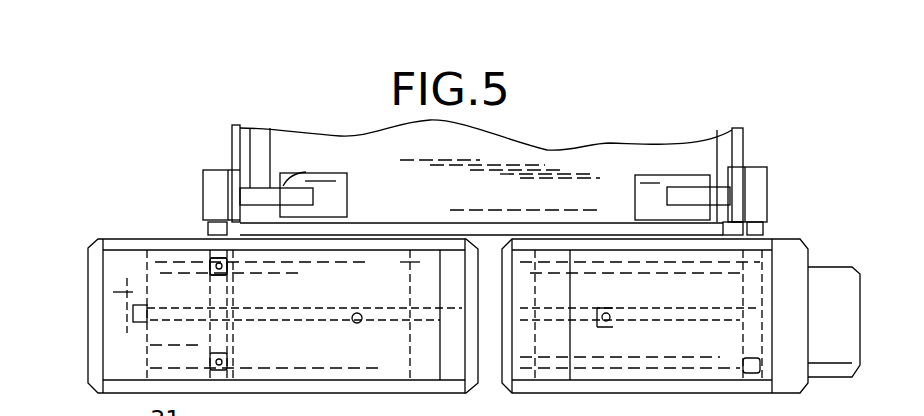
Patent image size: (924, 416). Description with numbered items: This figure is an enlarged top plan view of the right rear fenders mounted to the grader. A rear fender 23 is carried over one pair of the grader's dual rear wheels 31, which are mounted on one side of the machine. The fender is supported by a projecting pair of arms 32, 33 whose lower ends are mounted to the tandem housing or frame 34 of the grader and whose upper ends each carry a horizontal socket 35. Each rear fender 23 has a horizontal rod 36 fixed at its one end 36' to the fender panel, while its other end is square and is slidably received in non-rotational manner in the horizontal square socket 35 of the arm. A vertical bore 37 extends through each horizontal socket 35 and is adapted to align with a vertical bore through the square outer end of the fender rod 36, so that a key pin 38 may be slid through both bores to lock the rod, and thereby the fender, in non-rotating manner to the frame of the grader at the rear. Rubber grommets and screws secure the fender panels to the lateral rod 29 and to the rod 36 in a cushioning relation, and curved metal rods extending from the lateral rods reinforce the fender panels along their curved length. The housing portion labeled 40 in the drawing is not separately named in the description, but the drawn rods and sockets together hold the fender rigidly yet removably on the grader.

The rear fender 23 is at (813, 258).
The lateral rod 29 is at (767, 215).
The rear wheels 31 is at (852, 364).
The arm 32 is at (300, 187).
The arm 33 is at (692, 187).
The tandem housing or frame 34 is at (547, 150).
The horizontal socket 35 is at (818, 192).
The horizontal rod 36 is at (520, 213).
The one end of horizontal rod 36' is at (272, 311).
The vertical bore 37 is at (214, 190).
The key pin 38 is at (158, 214).
The left housing 40 is at (80, 292).